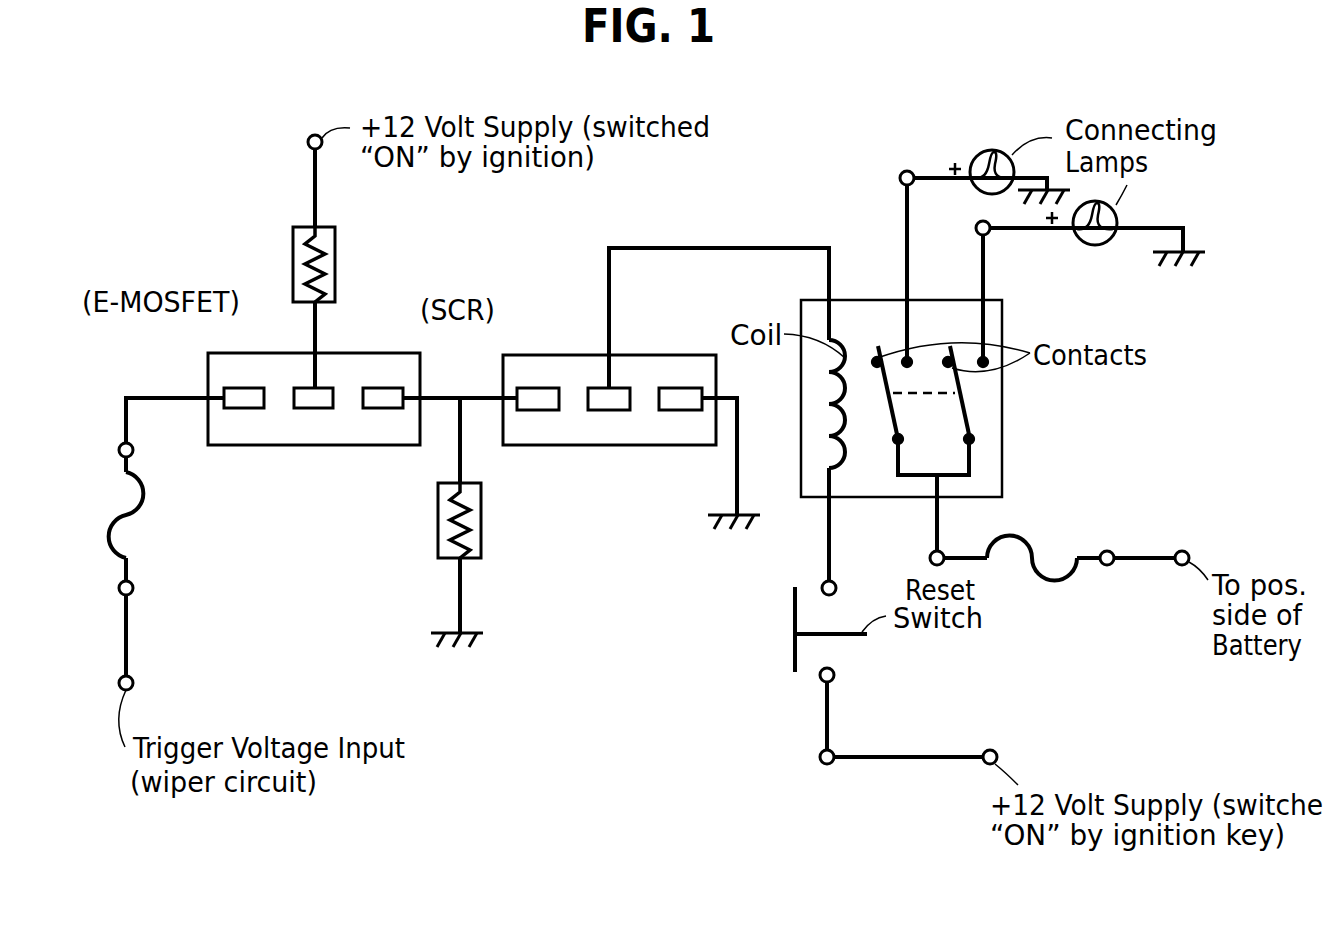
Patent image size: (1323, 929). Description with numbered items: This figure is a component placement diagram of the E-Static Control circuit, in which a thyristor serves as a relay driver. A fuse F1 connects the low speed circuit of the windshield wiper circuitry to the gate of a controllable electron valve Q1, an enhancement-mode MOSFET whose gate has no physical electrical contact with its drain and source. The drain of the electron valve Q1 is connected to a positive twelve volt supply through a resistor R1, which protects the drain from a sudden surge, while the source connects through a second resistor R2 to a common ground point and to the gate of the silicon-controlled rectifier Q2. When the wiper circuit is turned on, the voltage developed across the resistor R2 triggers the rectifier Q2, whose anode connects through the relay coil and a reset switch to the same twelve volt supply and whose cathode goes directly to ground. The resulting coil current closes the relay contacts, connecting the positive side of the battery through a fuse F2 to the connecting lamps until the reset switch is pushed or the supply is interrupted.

The resistor R1 is at (293, 265).
The second resistor R2 is at (437, 533).
The controllable electron valve Q1 is at (207, 388).
The silicon-controlled rectifier Q2 is at (503, 388).
The fuse F1 is at (103, 532).
The fuse F2 is at (1018, 538).